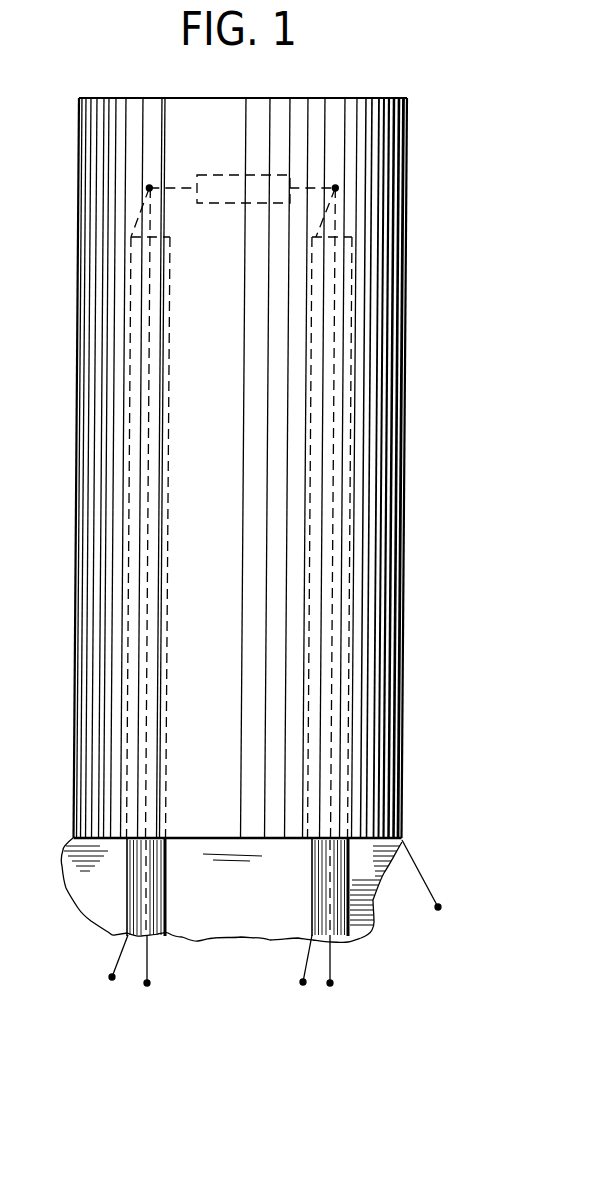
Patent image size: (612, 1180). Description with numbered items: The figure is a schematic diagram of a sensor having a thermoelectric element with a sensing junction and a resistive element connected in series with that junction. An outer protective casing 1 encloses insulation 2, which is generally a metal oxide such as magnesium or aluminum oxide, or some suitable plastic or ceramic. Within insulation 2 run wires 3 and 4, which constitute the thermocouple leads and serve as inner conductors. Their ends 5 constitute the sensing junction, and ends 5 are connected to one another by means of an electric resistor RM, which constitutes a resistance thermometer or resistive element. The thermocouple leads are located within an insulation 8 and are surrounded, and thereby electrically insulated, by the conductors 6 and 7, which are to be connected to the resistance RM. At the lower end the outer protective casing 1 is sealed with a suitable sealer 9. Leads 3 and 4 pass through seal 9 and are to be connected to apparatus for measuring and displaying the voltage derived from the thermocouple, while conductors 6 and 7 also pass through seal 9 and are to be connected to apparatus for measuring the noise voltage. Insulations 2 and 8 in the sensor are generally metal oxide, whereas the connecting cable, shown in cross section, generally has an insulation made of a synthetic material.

The outer protective casing 1 is at (405, 287).
The insulation 2 is at (363, 502).
The wire 3 is at (150, 307).
The wire 4 is at (337, 365).
The ends 5 is at (150, 188).
The conductor 6 is at (315, 472).
The conductor 7 is at (169, 405).
The insulation 8 is at (153, 449).
The sealer 9 is at (75, 855).
The electric resistor RM is at (233, 190).